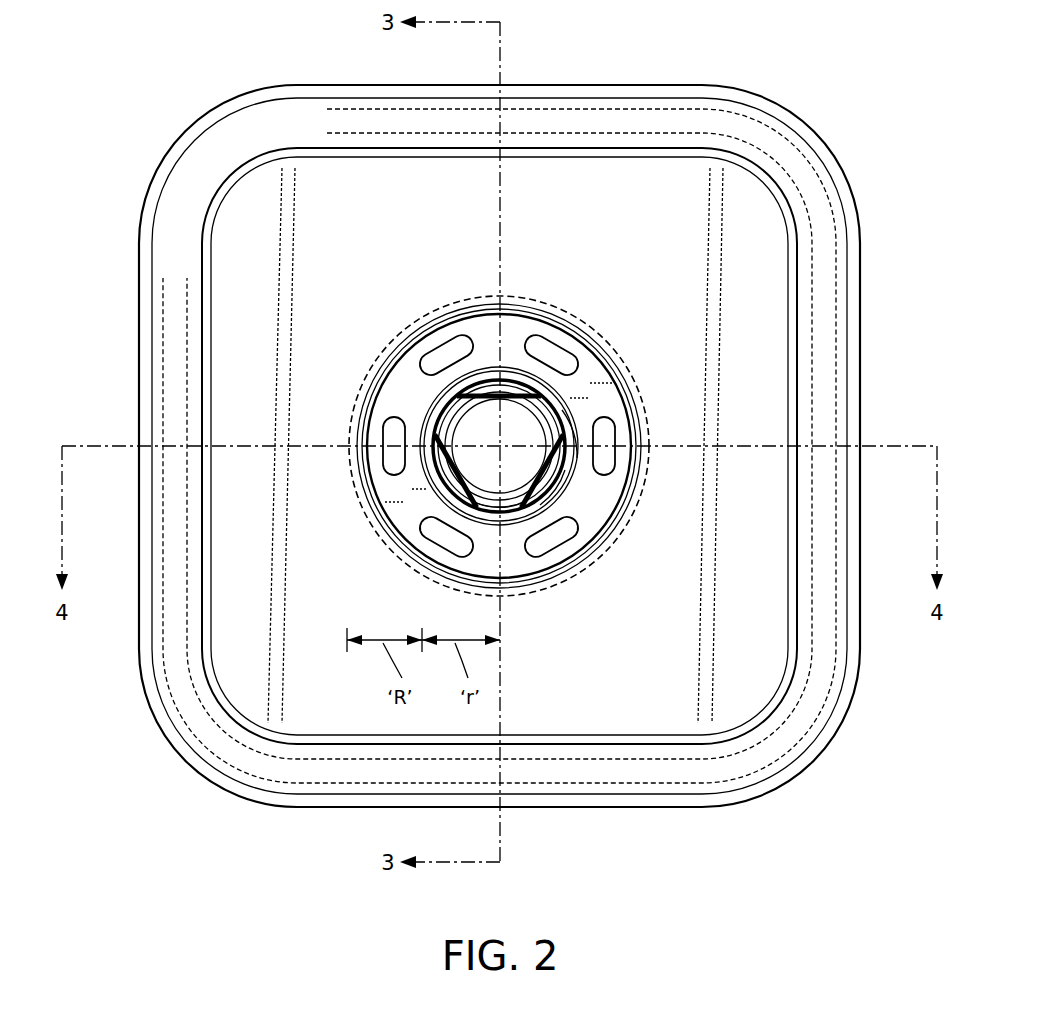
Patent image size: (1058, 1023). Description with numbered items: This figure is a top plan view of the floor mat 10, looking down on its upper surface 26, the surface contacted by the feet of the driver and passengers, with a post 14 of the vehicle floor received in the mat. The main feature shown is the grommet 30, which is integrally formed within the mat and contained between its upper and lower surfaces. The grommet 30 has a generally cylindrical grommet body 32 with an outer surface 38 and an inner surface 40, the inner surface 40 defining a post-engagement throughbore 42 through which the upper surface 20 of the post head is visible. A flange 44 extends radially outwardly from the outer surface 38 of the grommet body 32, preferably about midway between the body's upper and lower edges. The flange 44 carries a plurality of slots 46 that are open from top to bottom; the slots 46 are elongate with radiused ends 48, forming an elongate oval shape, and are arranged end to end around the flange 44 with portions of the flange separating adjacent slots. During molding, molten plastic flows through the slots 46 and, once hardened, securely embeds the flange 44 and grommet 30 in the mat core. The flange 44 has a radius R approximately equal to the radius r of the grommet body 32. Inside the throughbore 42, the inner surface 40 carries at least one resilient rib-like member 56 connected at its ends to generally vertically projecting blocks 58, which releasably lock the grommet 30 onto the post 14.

The floor mat 10 is at (818, 72).
The post 14 is at (562, 397).
The upper surface of head 20 is at (522, 425).
The upper surface 26 is at (669, 254).
The grommet 30 is at (370, 318).
The grommet body 32 is at (487, 513).
The outer surface 38 is at (577, 458).
The inner surface 40 is at (562, 482).
The post-engagement throughbore 42 is at (452, 428).
The flange 44 is at (521, 325).
The slots 46 is at (550, 537).
The radiused ends 48 is at (420, 377).
The rib-like member 56 is at (541, 376).
The vertically-projecting blocks 58 is at (453, 395).